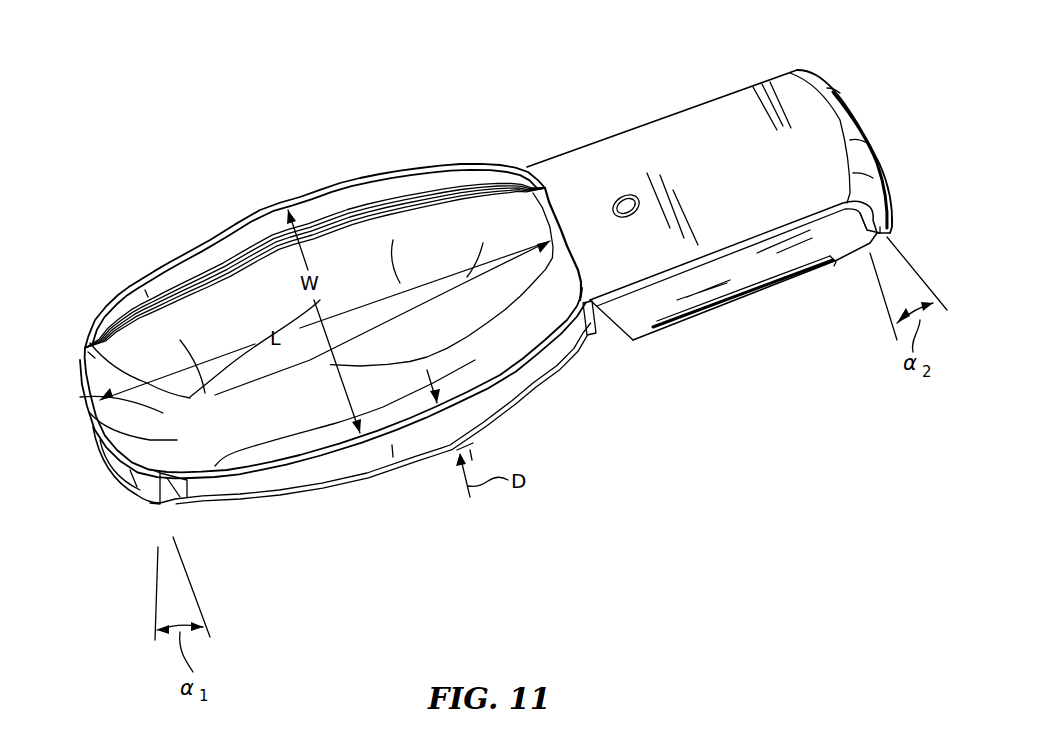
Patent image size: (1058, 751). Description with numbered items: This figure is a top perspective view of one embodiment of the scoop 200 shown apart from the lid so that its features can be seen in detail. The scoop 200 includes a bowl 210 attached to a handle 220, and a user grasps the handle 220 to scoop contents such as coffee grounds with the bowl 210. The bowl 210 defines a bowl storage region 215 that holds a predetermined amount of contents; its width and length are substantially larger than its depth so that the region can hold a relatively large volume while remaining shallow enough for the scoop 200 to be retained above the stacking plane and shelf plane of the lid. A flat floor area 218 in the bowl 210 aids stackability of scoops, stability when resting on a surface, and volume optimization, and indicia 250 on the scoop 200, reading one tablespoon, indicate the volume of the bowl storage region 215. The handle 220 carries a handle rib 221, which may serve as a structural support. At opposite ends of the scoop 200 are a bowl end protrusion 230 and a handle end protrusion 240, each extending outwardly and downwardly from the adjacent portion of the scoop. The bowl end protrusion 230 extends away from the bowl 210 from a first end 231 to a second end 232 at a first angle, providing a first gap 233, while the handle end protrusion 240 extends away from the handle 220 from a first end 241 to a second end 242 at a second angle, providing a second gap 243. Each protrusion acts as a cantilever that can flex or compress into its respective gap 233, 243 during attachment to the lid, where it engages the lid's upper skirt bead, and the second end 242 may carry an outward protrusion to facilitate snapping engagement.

The scoop 200 is at (197, 154).
The bowl 210 is at (305, 218).
The bowl storage region 215 is at (228, 314).
The flat floor area 218 is at (383, 373).
The handle 220 is at (723, 140).
The handle rib 221 is at (677, 287).
The bowl end protrusion 230 is at (103, 437).
The first end 231 is at (95, 352).
The second end 232 is at (113, 473).
The first gap 233 is at (158, 520).
The handle end protrusion 240 is at (883, 183).
The first end 241 is at (833, 100).
The second end 242 is at (878, 230).
The second gap 243 is at (868, 282).
The indicia 250 is at (580, 198).